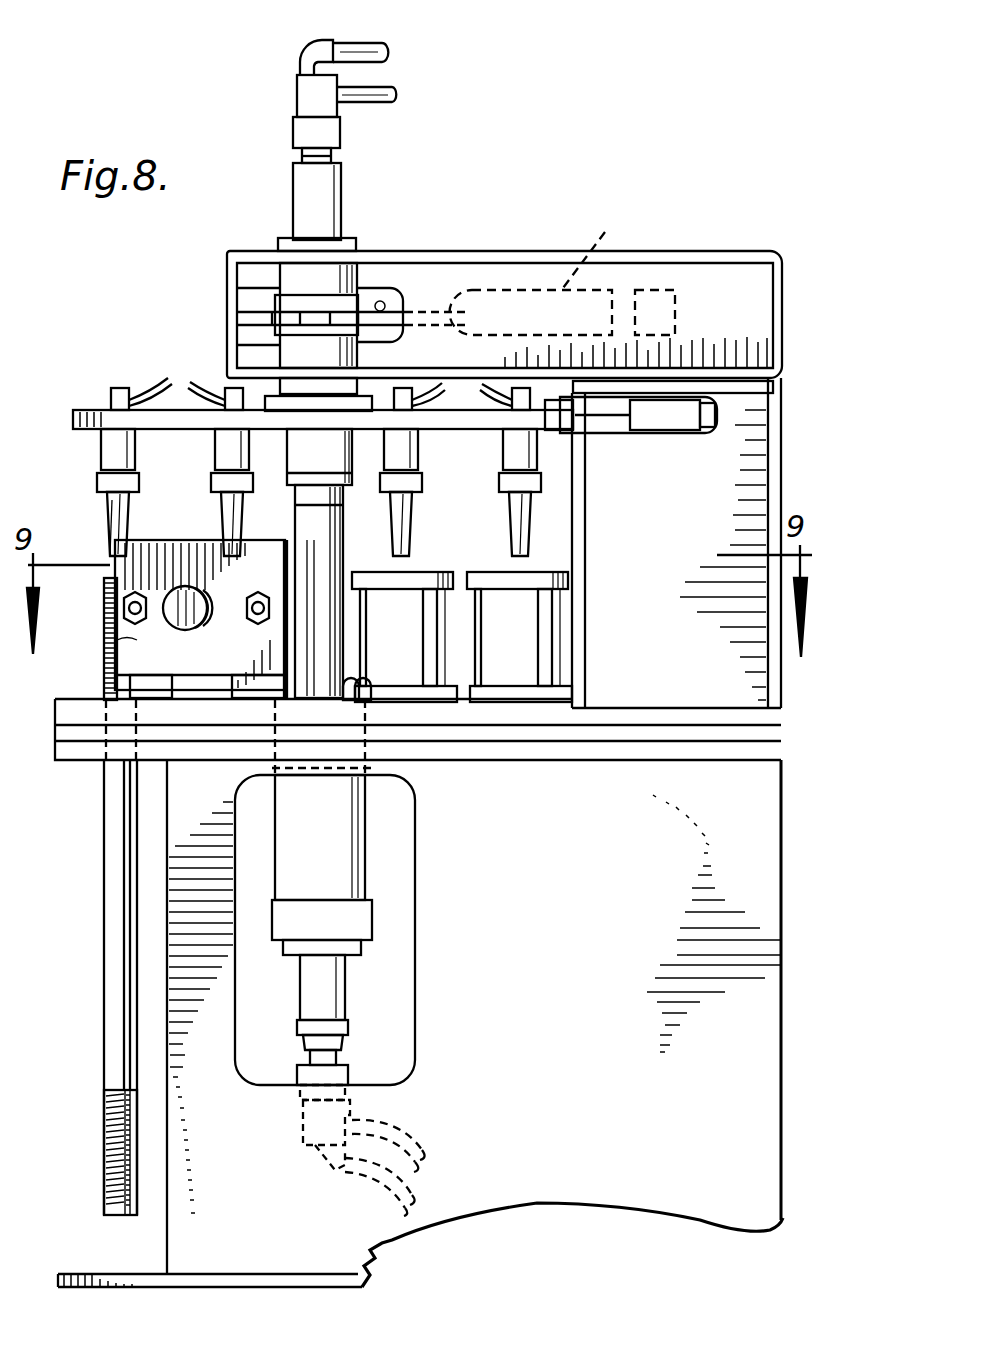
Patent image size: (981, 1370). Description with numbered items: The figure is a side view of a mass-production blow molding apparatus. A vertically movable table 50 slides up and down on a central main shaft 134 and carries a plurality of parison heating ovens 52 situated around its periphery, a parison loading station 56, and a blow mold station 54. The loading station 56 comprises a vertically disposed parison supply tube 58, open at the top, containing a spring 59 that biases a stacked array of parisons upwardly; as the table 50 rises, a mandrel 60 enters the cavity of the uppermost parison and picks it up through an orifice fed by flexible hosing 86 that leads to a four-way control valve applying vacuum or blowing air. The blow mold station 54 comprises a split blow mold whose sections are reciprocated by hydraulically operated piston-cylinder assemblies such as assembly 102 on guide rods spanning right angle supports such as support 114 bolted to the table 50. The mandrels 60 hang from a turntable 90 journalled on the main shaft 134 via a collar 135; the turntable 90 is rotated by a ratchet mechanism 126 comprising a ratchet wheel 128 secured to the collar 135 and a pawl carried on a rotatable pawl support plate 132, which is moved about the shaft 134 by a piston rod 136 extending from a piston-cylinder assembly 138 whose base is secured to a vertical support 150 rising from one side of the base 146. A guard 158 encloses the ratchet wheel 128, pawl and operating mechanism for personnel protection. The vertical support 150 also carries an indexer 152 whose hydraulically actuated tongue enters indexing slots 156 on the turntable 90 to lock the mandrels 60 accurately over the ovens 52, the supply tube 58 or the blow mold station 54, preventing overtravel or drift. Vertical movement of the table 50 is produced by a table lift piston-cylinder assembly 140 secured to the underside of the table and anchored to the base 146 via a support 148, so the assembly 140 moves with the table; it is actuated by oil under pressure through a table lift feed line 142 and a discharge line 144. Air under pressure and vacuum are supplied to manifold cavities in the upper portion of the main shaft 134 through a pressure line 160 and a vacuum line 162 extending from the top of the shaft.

The pressure line 160 is at (375, 55).
The vacuum line 162 is at (395, 105).
The collar 135 is at (340, 215).
The guard 158 is at (745, 268).
The pawl support plate 132 is at (345, 262).
The ratchet wheel 128 is at (355, 295).
The ratchet mechanism 126 is at (418, 290).
The piston rod 136 is at (462, 290).
The piston-cylinder assembly 138 is at (395, 290).
The turntable 90 is at (73, 420).
The flexible hosing 86 is at (135, 392).
The indexing slots 156 is at (138, 425).
The mandrel 60 is at (112, 510).
The main shaft 134 is at (330, 508).
The indexer 152 is at (592, 435).
The vertical support 150 is at (676, 543).
The blow mold station 54 is at (152, 530).
The piston-cylinder assembly 102 is at (185, 630).
The parison loading station 56 is at (100, 612).
The right angle support 114 is at (100, 644).
The parison heating ovens 52 is at (457, 637).
The table 50 is at (55, 710).
The base 146 is at (740, 806).
The parison supply tube 58 is at (100, 900).
The spring 59 is at (100, 1160).
The table lift piston-cylinder assembly 140 is at (350, 852).
The support 148 is at (340, 980).
The table lift feed line 142 is at (415, 1150).
The discharge line 144 is at (375, 1190).